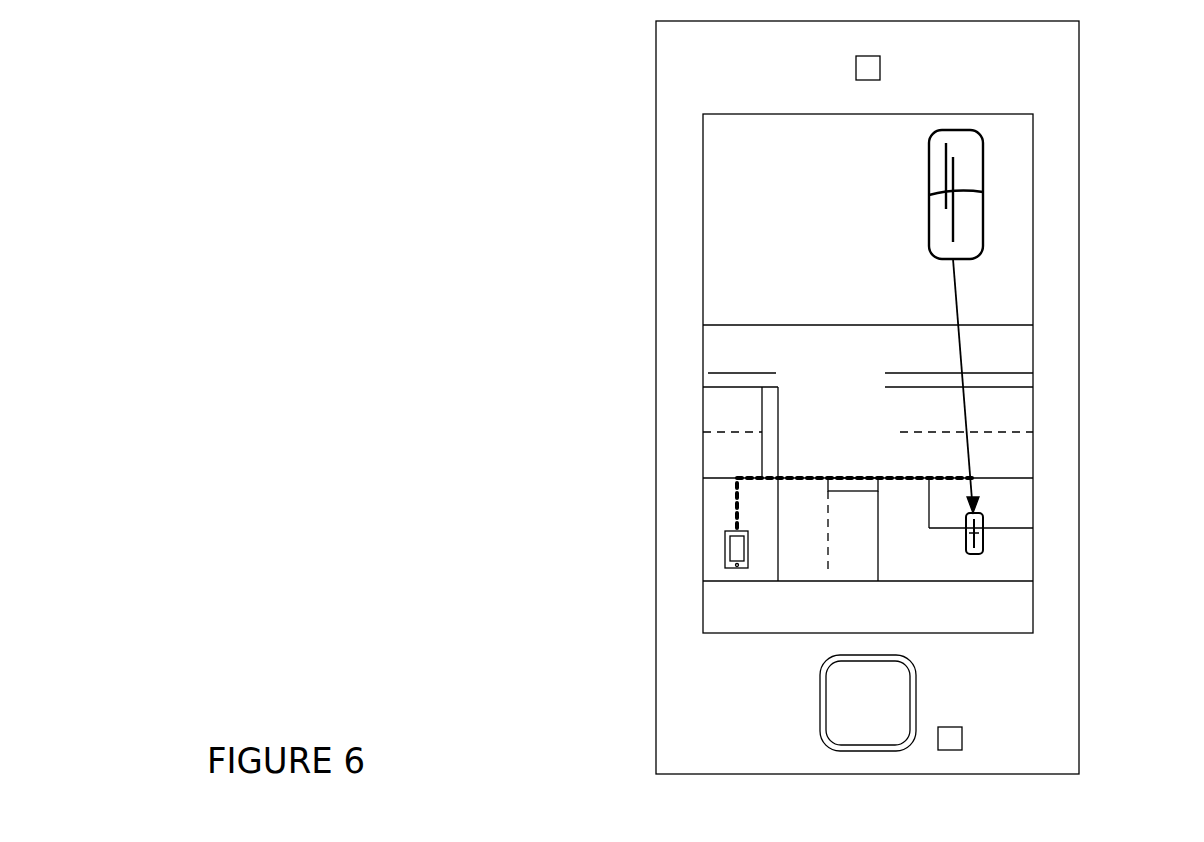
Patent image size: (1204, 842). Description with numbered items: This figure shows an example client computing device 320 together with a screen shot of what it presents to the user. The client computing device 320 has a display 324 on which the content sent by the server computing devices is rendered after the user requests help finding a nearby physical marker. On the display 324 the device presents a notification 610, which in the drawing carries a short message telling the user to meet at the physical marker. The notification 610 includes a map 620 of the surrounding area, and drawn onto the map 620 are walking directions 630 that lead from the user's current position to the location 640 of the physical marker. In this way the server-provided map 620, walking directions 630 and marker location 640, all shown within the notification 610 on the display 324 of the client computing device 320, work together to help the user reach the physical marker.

The client computing device 320 is at (1079, 145).
The display 324 is at (703, 250).
The notification 610 is at (703, 181).
The map 620 is at (703, 444).
The walking directions 630 is at (733, 515).
The location of the physical marker 640 is at (985, 541).